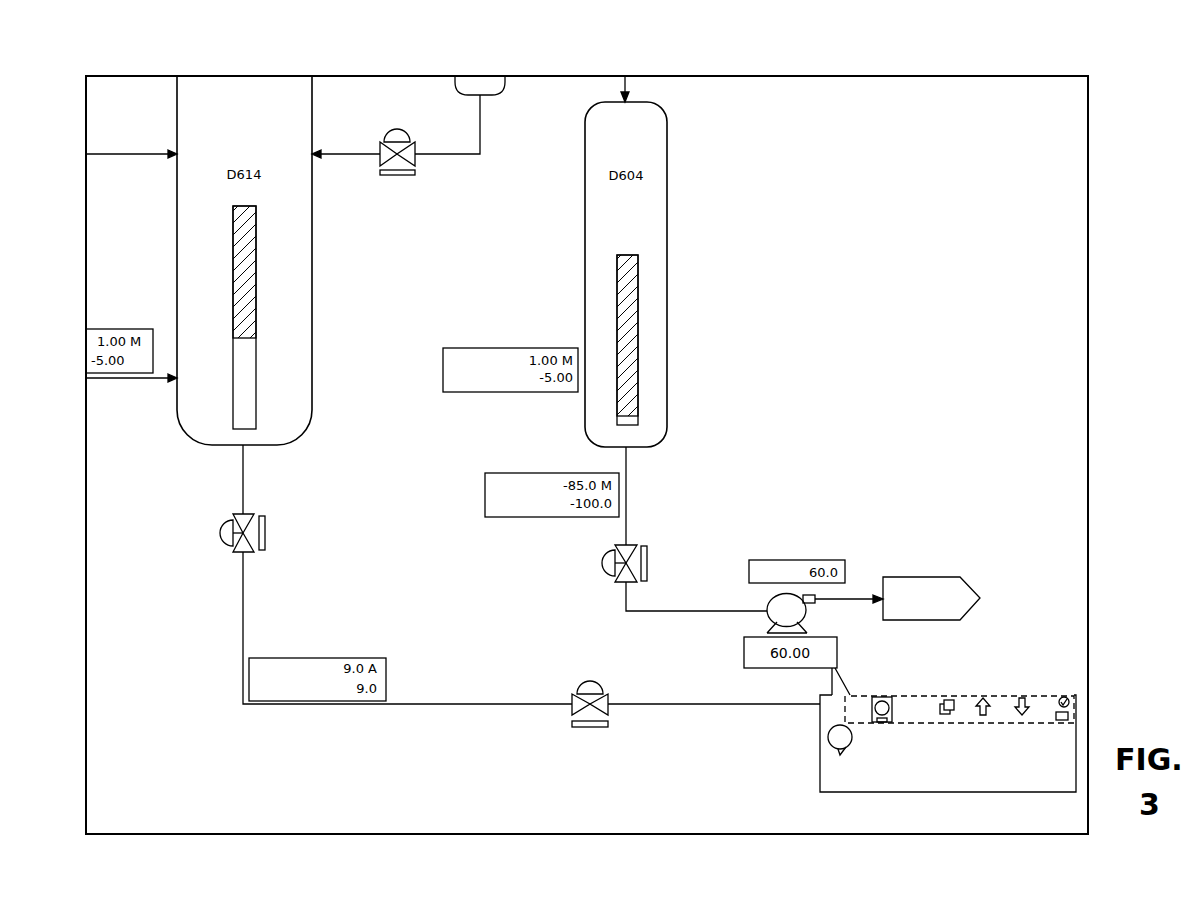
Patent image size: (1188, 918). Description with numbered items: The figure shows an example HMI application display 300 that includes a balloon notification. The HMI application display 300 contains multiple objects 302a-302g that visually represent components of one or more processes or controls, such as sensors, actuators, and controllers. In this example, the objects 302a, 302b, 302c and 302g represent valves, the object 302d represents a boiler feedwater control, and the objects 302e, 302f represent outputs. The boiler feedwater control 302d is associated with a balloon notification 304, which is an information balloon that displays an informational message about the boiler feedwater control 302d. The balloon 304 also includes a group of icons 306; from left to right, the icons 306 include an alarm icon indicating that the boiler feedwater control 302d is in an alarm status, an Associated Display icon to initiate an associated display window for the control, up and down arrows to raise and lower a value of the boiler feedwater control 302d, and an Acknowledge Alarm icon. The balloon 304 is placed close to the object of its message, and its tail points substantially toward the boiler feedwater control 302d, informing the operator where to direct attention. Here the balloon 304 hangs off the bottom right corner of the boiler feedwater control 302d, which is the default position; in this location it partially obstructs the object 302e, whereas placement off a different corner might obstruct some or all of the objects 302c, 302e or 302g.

The HMI application display 300 is at (965, 76).
The object 302a is at (405, 176).
The object 302b is at (268, 530).
The object 302c is at (650, 556).
The boiler feedwater control 302d is at (770, 618).
The object 302e is at (948, 577).
The object 302f is at (960, 693).
The object 302g is at (585, 684).
The balloon notification 304 is at (914, 717).
The icons 306 is at (845, 705).